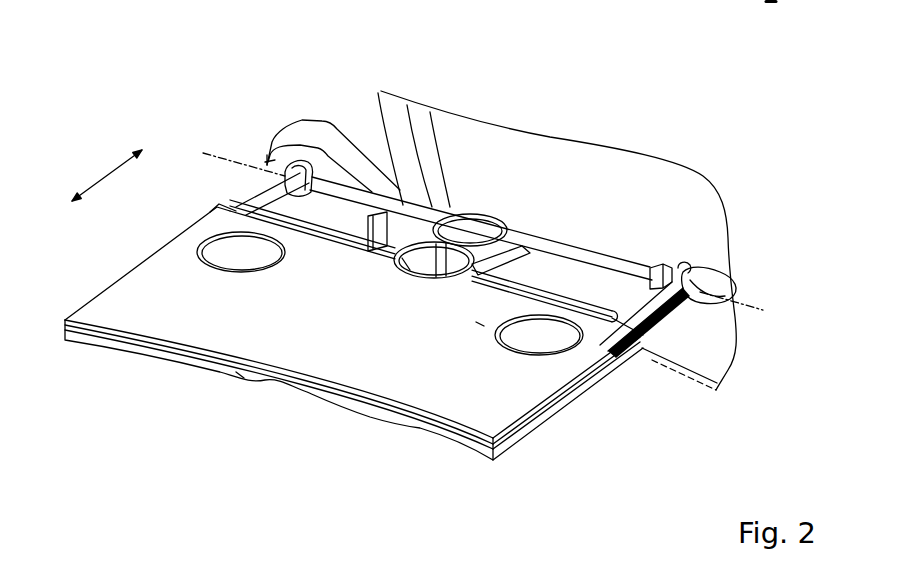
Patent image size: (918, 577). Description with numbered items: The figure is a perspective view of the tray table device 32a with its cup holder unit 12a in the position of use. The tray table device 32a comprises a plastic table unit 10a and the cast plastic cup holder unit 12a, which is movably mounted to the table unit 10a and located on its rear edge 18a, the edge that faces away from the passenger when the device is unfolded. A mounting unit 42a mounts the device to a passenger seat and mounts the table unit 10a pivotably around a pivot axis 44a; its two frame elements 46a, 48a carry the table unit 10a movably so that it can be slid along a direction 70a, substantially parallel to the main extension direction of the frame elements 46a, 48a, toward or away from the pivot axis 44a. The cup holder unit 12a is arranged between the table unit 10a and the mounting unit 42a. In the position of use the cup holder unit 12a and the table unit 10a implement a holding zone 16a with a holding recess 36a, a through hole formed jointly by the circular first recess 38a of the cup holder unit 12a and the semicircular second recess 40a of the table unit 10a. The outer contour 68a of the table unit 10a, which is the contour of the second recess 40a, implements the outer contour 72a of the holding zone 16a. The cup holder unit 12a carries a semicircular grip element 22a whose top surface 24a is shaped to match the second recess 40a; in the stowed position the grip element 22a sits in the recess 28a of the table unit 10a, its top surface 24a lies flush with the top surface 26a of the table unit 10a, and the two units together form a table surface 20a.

The table unit 10a is at (563, 432).
The cup holder unit 12a is at (530, 222).
The holding zone 16a is at (414, 230).
The rear edge 18a is at (200, 213).
The table surface 20a is at (617, 378).
The grip element 22a is at (380, 261).
The top surface of the grip element 24a is at (455, 229).
The top surface of the table unit 26a is at (480, 325).
The recess 28a is at (434, 261).
The tray table device 32a is at (172, 117).
The holding recess 36a is at (416, 264).
The first recess 38a is at (513, 241).
The second recess 40a is at (399, 382).
The mounting unit 42a is at (712, 309).
The pivot axis 44a is at (238, 160).
The frame element 46a is at (247, 193).
The frame element 48a is at (659, 312).
The outer contour of the table unit 68a is at (441, 260).
The direction 70a is at (107, 173).
The outer contour of the holding zone 72a is at (501, 260).